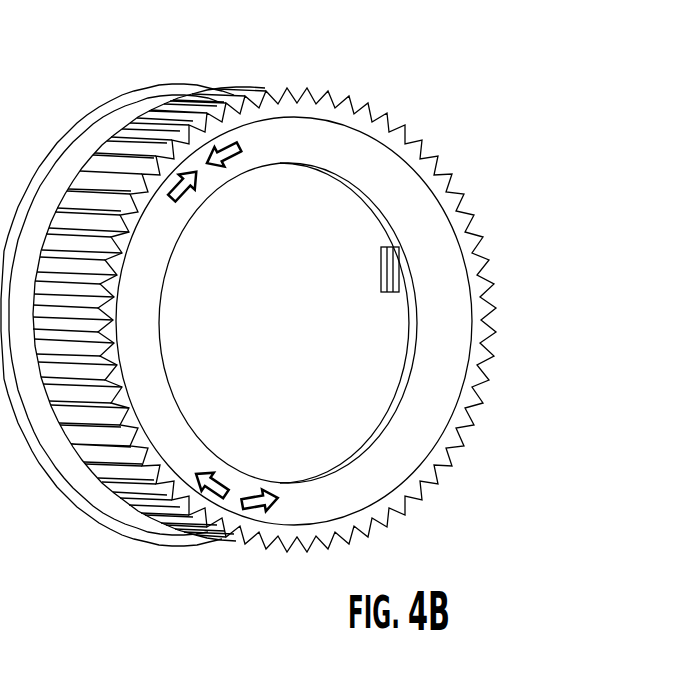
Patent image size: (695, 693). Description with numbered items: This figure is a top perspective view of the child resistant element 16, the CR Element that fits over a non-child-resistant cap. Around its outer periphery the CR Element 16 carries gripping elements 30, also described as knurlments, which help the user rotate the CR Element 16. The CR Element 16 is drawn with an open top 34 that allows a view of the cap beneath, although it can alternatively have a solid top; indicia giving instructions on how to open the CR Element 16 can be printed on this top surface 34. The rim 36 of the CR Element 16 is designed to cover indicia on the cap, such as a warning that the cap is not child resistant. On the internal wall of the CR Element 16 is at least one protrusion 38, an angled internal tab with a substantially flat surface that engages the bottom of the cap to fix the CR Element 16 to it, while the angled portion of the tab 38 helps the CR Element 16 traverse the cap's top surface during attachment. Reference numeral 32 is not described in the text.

The child resistant element 16 is at (511, 487).
The gripping elements 30 is at (241, 94).
The ribbed skirt 32 is at (180, 475).
The top surface 34 is at (358, 136).
The rim 36 is at (471, 293).
The protrusion 38 is at (401, 249).